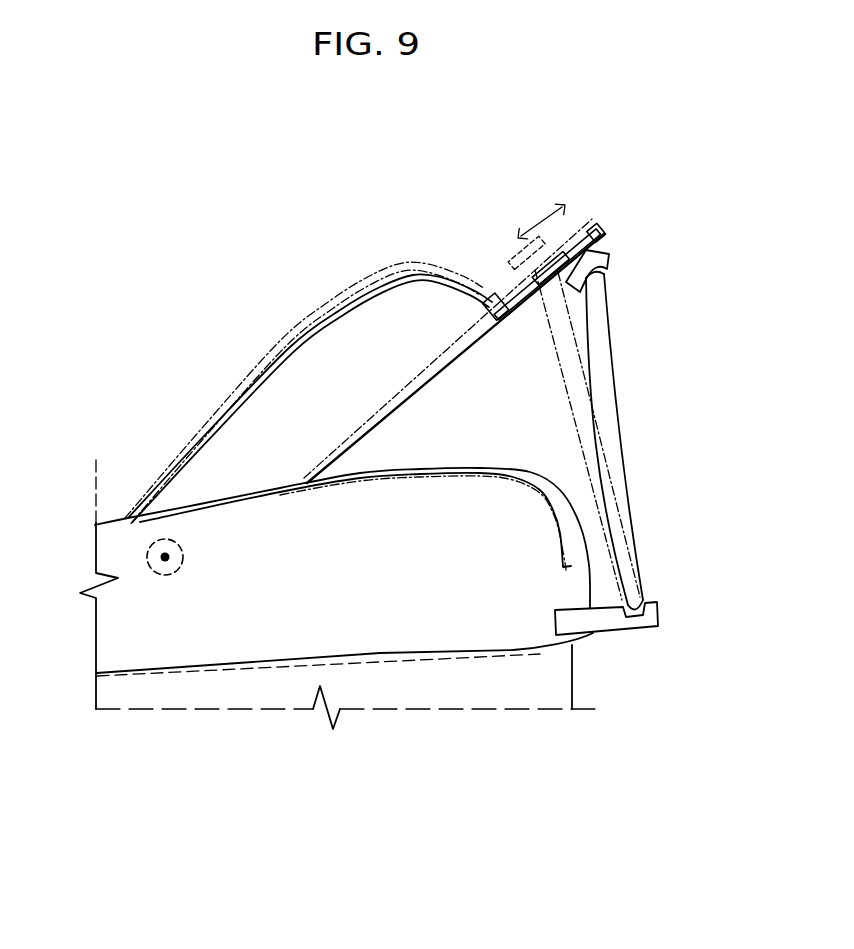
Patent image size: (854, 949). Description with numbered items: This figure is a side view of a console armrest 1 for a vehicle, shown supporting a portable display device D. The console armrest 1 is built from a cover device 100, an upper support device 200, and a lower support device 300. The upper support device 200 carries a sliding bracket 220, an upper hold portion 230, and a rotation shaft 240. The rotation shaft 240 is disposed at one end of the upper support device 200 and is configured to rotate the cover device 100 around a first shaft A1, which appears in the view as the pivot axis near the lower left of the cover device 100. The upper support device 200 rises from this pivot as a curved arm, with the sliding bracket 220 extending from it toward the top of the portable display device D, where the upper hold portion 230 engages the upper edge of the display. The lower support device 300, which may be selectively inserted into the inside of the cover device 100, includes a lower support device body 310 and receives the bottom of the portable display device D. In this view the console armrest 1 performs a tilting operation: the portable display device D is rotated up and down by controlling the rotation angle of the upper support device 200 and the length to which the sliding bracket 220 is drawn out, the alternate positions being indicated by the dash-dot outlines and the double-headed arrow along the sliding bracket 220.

The console armrest 1 is at (196, 262).
The cover device 100 is at (281, 748).
The upper support device 200 is at (340, 282).
The sliding bracket 220 is at (577, 243).
The upper hold portion 230 is at (612, 256).
The rotation shaft 240 is at (164, 540).
The lower support device 300 is at (648, 645).
The lower support device body 310 is at (612, 622).
The first shaft A1 is at (167, 562).
The portable display device D is at (625, 432).